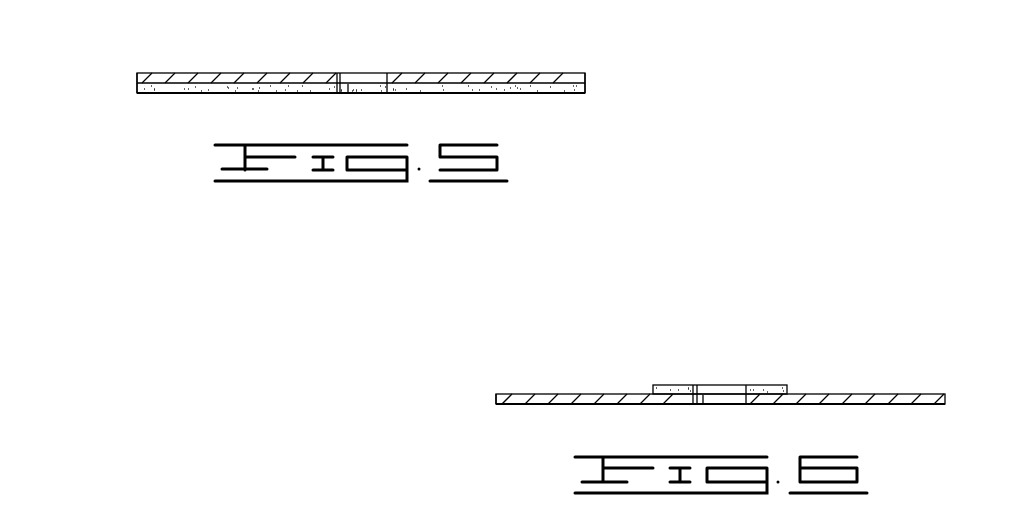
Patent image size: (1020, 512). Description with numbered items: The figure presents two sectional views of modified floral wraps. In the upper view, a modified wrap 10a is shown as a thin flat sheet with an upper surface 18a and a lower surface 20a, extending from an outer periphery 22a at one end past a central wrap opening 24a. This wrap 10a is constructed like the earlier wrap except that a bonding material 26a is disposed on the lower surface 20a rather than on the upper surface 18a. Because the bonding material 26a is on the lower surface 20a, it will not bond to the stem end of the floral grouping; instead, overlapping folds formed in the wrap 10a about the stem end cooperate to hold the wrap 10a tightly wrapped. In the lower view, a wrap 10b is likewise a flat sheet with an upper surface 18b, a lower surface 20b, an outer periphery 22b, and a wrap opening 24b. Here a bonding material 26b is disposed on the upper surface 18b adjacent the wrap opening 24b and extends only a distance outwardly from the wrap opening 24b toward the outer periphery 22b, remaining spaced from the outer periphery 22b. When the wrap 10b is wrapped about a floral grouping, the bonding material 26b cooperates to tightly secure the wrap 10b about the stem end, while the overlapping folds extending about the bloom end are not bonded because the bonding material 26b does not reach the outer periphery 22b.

In FIG. 5, the modified wrap 10a is at (280, 74).
In FIG. 5, the upper surface 18a is at (187, 75).
In FIG. 5, the lower surface 20a is at (193, 93).
In FIG. 5, the outer periphery 22a is at (137, 73).
In FIG. 5, the wrap opening 24a is at (342, 73).
In FIG. 5, the bonding material 26a is at (522, 91).
In FIG. 6, the wrap 10b is at (560, 393).
In FIG. 6, the upper surface 18b is at (545, 397).
In FIG. 6, the lower surface 20b is at (535, 405).
In FIG. 6, the outer periphery 22b is at (496, 394).
In FIG. 6, the wrap opening 24b is at (708, 401).
In FIG. 6, the bonding material 26b is at (673, 385).